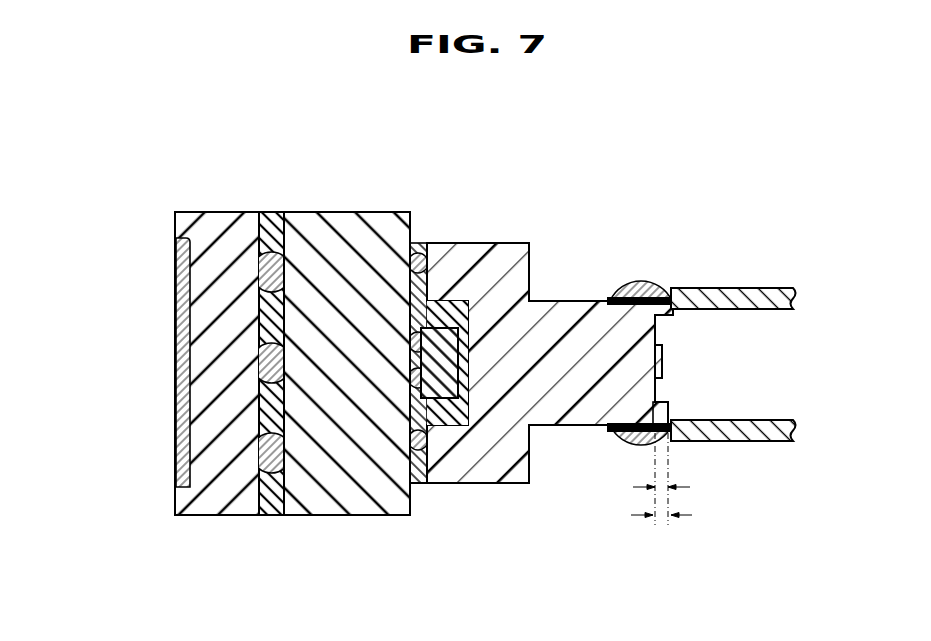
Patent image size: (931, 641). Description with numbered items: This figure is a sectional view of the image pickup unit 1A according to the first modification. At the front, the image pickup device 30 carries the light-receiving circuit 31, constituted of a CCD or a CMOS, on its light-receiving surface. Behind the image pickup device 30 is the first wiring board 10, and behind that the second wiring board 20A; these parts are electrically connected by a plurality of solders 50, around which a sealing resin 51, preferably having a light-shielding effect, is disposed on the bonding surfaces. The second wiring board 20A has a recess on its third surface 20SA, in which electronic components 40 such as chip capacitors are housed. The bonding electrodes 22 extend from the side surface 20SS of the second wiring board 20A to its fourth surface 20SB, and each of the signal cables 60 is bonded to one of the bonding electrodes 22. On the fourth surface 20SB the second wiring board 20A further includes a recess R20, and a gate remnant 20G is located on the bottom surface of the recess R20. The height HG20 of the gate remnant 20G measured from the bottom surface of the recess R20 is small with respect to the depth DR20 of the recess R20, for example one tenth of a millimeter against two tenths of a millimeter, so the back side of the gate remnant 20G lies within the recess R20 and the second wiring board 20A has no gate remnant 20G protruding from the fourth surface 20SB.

The image pickup unit 1A is at (124, 199).
The first wiring board 10 is at (342, 212).
The second wiring board 20A is at (561, 371).
The gate remnant 20G is at (663, 355).
The third surface 20SA is at (413, 435).
The fourth surface 20SB is at (674, 408).
The side surface 20SS is at (565, 296).
The bonding electrodes 22 is at (657, 296).
The image pickup device 30 is at (218, 212).
The light-receiving circuit 31 is at (175, 292).
The electronic components 40 is at (446, 326).
The solders 50 is at (270, 225).
The sealing resin 51 is at (268, 516).
The signal cables 60 is at (752, 288).
The recess R20 is at (672, 337).
The depth of the recess DR20 is at (695, 479).
The height of the gate remnant HG20 is at (695, 518).